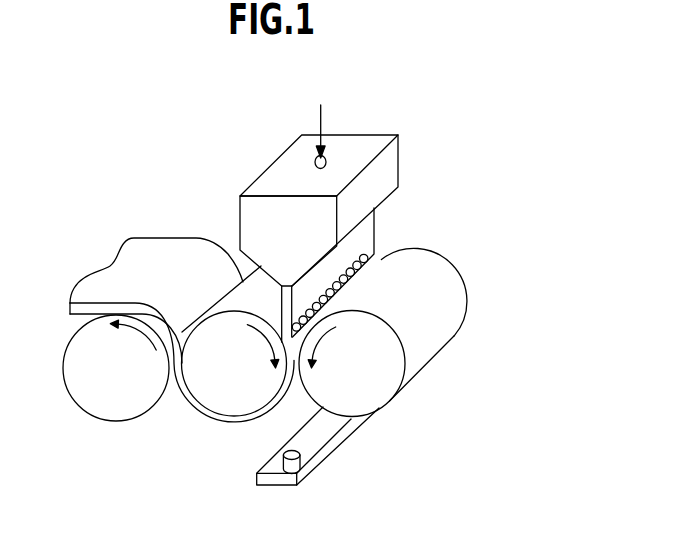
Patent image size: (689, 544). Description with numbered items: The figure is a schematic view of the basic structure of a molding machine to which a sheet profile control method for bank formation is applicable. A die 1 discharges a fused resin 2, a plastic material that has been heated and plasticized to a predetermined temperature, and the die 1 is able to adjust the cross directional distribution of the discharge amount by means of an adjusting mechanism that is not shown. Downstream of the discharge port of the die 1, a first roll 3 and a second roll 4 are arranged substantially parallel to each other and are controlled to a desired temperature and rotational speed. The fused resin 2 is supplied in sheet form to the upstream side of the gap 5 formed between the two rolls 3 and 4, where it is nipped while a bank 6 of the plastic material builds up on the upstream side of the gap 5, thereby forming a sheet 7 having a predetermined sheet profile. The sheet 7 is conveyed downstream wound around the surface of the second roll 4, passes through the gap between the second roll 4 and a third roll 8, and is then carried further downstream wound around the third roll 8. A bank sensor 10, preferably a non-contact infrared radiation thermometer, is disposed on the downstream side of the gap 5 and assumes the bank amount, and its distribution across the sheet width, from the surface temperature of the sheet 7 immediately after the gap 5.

The die 1 is at (264, 179).
The fused resin 2 is at (374, 228).
The first roll 3 is at (386, 386).
The second roll 4 is at (210, 402).
The gap 5 is at (298, 399).
The bank 6 is at (372, 268).
The sheet 7 is at (158, 245).
The third roll 8 is at (87, 395).
The bank sensor 10 is at (300, 462).